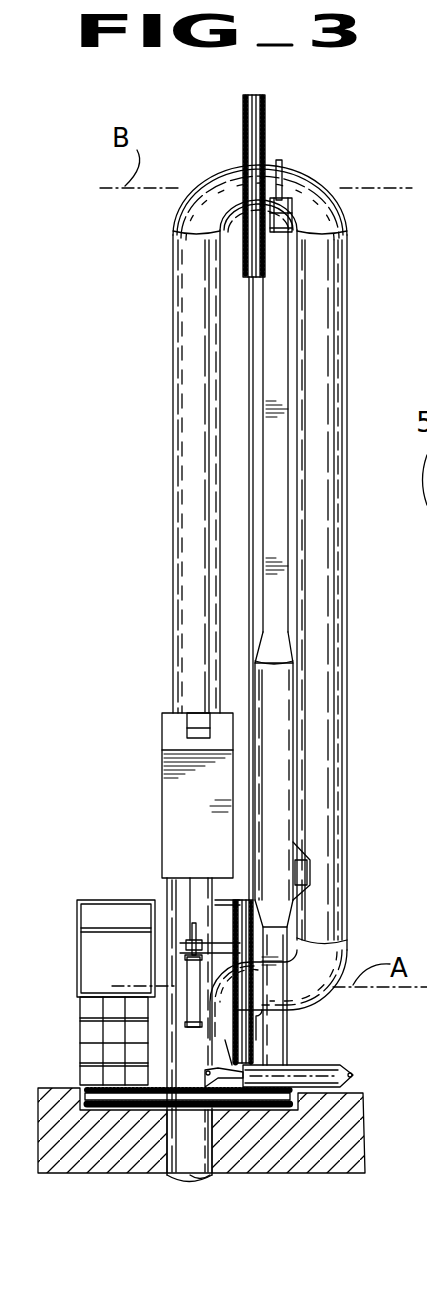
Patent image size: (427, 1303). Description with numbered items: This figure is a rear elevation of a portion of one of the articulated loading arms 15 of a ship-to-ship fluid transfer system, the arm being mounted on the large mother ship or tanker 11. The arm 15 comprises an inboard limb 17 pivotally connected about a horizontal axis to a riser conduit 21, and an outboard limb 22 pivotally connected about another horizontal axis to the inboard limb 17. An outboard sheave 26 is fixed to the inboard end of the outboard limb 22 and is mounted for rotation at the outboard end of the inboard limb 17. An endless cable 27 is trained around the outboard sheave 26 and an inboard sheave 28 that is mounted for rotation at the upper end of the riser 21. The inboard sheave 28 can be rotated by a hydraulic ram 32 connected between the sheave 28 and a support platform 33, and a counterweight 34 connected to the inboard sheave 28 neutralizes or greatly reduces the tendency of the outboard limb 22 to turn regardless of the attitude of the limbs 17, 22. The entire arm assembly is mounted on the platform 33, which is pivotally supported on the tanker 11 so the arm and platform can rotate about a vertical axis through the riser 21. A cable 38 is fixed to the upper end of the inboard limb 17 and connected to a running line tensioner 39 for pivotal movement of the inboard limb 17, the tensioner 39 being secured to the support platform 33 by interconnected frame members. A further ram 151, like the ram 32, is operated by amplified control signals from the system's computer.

The mother ship or tanker 11 is at (283, 1170).
The articulated loading arm 15 is at (300, 148).
The inboard limb 17 is at (346, 281).
The riser conduit 21 is at (172, 1157).
The outboard limb 22 is at (178, 392).
The outboard sheave 26 is at (243, 116).
The endless cable 27 is at (249, 302).
The inboard sheave 28 is at (254, 1022).
The hydraulic ram 32 is at (190, 968).
The support platform 33 is at (97, 1085).
The counterweight 34 is at (175, 780).
The cable 38 is at (292, 208).
The running line tensioner 39 is at (288, 776).
The ram 151 is at (305, 1067).